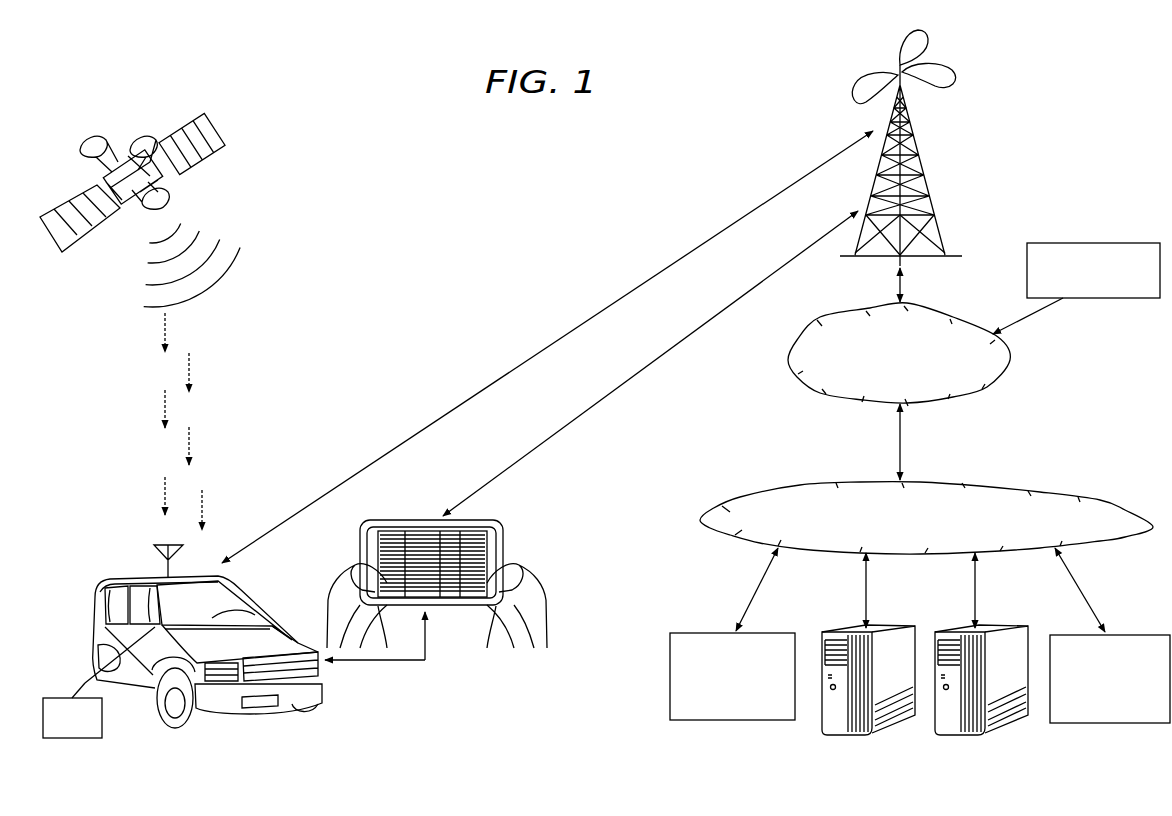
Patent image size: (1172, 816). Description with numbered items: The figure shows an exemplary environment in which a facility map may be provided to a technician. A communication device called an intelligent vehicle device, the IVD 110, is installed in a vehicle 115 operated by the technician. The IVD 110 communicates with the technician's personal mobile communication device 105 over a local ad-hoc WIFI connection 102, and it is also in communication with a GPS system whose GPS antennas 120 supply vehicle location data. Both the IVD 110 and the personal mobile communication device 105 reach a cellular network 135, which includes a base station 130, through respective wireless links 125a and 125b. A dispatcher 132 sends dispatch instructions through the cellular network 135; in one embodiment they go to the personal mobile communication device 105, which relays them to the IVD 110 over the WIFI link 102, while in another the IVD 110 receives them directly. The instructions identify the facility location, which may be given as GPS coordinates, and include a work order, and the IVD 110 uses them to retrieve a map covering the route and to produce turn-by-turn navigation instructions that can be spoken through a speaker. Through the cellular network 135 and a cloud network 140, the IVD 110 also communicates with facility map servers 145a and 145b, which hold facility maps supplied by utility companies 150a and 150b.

The local ad-hoc WIFI connection 102 is at (392, 662).
The personal mobile communication device 105 is at (405, 520).
The intelligent vehicle device (IVD) 110 is at (68, 740).
The vehicle 115 is at (112, 577).
The GPS antennas 120 is at (218, 122).
The wireless link 125a is at (552, 340).
The wireless link 125b is at (597, 403).
The base station 130 is at (927, 145).
The dispatcher 132 is at (1088, 243).
The cellular network 135 is at (805, 388).
The cloud network 140 is at (982, 485).
The facility map server 145a is at (970, 736).
The facility map server 145b is at (858, 736).
The utility company 150a is at (1108, 724).
The utility company 150b is at (720, 722).